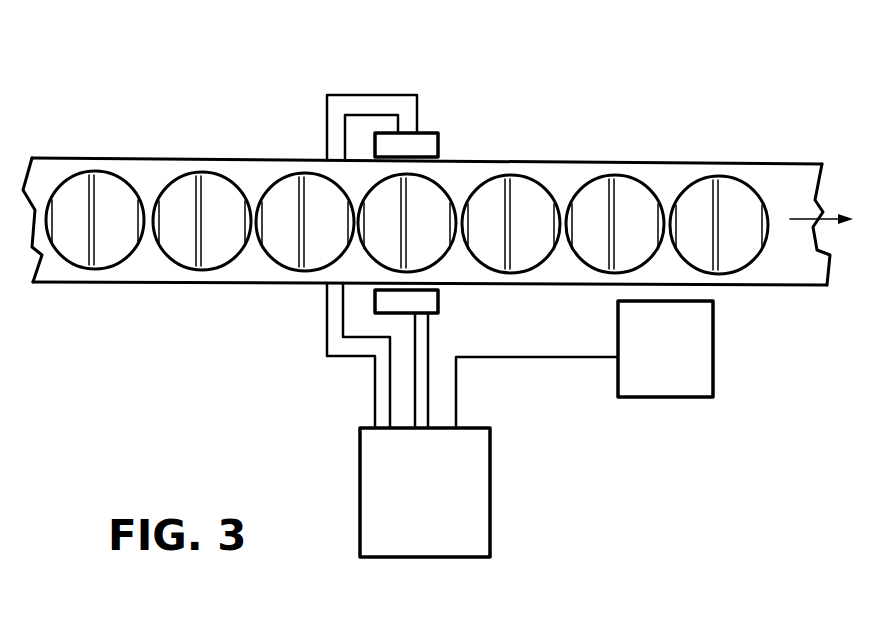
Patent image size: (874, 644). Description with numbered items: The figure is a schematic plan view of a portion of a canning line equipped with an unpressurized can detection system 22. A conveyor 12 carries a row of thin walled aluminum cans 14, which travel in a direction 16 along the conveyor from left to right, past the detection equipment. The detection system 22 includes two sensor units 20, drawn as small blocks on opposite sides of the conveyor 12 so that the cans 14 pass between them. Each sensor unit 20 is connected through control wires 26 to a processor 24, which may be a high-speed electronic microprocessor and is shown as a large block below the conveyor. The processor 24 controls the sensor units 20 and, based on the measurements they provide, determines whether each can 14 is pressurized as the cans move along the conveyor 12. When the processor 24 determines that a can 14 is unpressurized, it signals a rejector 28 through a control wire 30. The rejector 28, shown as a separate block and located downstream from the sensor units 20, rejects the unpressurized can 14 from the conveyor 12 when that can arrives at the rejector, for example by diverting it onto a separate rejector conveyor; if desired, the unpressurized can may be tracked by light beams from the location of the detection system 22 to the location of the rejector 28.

The conveyor 12 is at (153, 265).
The can 14 is at (288, 192).
The direction 16 is at (805, 223).
The sensor units 20 is at (438, 140).
The unpressurized can detection system 22 is at (610, 80).
The processor 24 is at (380, 472).
The control wires 26 is at (383, 115).
The rejector 28 is at (698, 354).
The control wire 30 is at (562, 357).